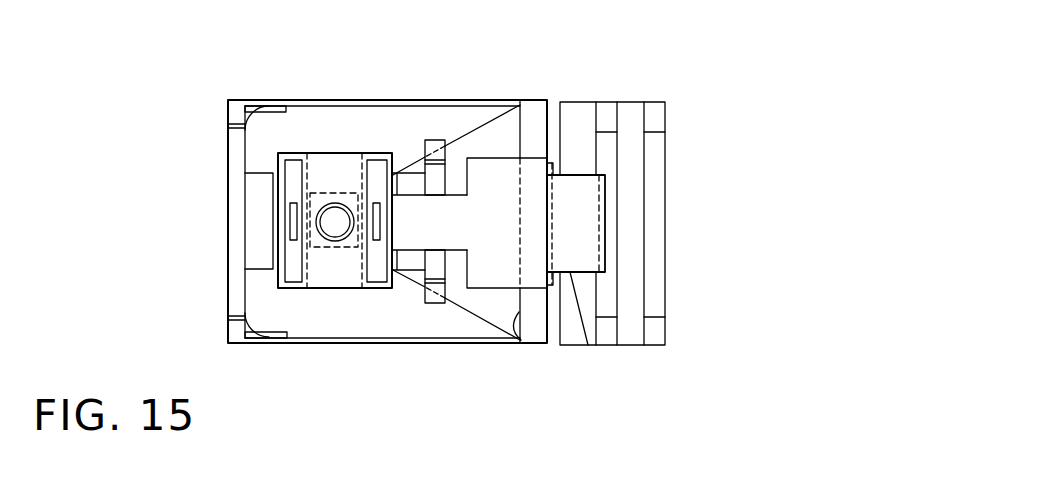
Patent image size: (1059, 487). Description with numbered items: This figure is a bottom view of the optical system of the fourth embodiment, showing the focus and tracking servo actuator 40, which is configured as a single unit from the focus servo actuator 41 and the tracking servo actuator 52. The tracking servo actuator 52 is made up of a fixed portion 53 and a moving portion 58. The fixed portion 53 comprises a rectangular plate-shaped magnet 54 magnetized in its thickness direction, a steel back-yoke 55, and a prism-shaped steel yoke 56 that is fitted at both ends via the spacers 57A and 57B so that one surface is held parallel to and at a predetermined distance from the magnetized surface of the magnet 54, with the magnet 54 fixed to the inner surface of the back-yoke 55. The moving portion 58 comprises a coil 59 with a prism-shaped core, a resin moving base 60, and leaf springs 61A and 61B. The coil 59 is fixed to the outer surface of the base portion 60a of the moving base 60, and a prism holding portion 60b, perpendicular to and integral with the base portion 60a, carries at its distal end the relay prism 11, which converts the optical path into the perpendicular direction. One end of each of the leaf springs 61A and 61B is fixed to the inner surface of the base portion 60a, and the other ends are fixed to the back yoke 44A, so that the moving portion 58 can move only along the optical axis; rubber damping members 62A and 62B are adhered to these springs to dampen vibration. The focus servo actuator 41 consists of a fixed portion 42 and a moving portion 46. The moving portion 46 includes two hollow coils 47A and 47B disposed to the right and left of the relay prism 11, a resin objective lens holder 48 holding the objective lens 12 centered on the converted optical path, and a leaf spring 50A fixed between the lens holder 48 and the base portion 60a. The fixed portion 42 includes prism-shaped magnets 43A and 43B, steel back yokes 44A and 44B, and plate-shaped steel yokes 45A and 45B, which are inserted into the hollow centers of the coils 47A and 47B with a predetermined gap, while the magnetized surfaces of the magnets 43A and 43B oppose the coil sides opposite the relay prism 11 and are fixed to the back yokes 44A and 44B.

The relay prism 11 is at (333, 247).
The objective lens 12 is at (333, 212).
The focus and tracking servo actuator 40 is at (213, 211).
The focus servo actuator 41 is at (277, 281).
The fixed portion 42 is at (515, 58).
The prism shaped magnet 43A is at (263, 173).
The prism shaped magnet 43B is at (411, 178).
The steel back yoke 44A is at (228, 112).
The steel back yoke 44B is at (433, 145).
The plate-shaped steel yoke 45A is at (293, 200).
The plate-shaped steel yoke 45B is at (380, 200).
The moving portion 46 is at (487, 389).
The coil 47A is at (312, 288).
The coil 47B is at (357, 288).
The objective lens holder 48 is at (318, 290).
The leaf spring 50A is at (432, 252).
The tracking servo actuator 52 is at (668, 192).
The fixed portion 53 is at (757, 61).
The plate-shaped magnet 54 is at (635, 107).
The steel back-yoke 55 is at (658, 108).
The prism-shaped steel yoke 56 is at (577, 100).
The spacer 57A is at (607, 107).
The spacer 57B is at (608, 332).
The moving portion 58 is at (688, 430).
The coil 59 is at (588, 345).
The moving base 60 is at (628, 389).
The base portion 60a is at (550, 288).
The prism holding portion 60b is at (492, 327).
The leaf spring 61A is at (505, 102).
The leaf spring 61B is at (483, 343).
The rubber damping member 62A is at (230, 128).
The rubber damping member 62B is at (230, 313).